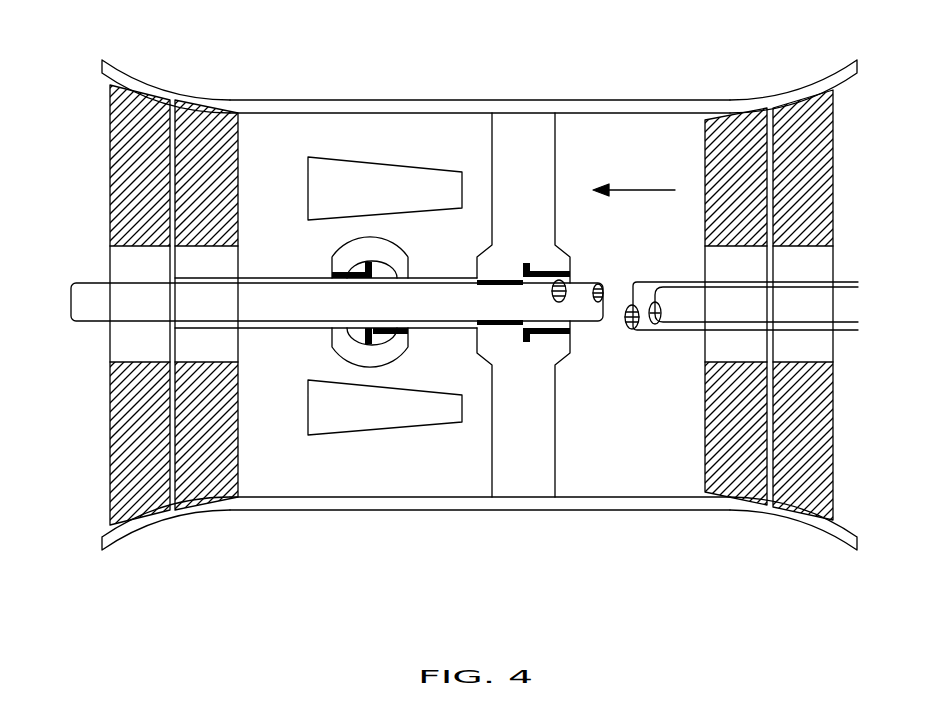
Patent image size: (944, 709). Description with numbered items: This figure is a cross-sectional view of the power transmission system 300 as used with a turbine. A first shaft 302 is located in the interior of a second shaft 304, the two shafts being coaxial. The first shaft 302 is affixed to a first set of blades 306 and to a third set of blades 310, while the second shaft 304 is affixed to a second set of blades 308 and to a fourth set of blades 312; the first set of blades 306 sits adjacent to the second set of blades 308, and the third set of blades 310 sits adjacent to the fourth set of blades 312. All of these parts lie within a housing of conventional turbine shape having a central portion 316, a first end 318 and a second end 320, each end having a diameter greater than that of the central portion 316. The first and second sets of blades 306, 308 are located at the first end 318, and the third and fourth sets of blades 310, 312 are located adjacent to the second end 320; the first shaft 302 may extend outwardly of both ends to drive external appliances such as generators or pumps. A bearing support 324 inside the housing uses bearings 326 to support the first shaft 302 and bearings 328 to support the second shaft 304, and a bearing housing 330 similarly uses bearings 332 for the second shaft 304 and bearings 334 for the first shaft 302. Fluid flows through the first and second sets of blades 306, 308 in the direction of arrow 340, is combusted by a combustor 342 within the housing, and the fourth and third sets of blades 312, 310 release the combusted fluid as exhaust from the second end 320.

The power transmission system 300 is at (639, 73).
The first shaft 302 is at (90, 318).
The second shaft 304 is at (275, 278).
The first set of blades 306 is at (835, 195).
The second set of blades 308 is at (705, 218).
The third set of blades 310 is at (110, 178).
The fourth set of blades 312 is at (240, 178).
The central portion 316 is at (470, 99).
The first end 318 is at (812, 60).
The second end 320 is at (128, 60).
The bearing support 324 is at (555, 175).
The bearings 326 is at (503, 330).
The bearings 328 is at (559, 302).
The bearing housing 330 is at (403, 250).
The bearings 332 is at (335, 272).
The bearings 334 is at (390, 336).
The arrow 340 is at (642, 188).
The combustor 342 is at (402, 180).